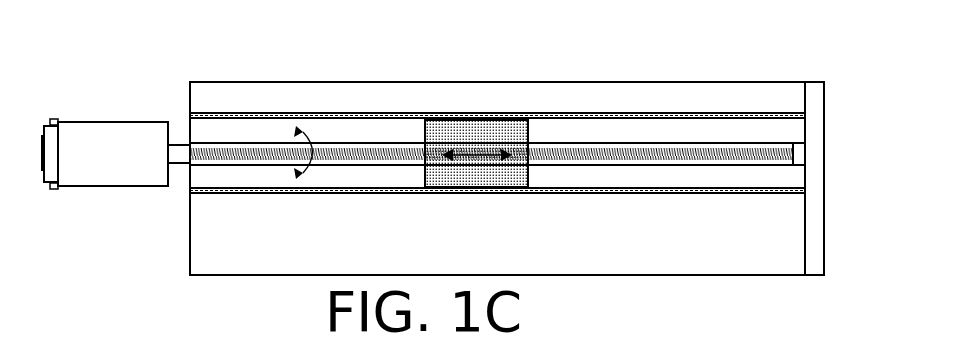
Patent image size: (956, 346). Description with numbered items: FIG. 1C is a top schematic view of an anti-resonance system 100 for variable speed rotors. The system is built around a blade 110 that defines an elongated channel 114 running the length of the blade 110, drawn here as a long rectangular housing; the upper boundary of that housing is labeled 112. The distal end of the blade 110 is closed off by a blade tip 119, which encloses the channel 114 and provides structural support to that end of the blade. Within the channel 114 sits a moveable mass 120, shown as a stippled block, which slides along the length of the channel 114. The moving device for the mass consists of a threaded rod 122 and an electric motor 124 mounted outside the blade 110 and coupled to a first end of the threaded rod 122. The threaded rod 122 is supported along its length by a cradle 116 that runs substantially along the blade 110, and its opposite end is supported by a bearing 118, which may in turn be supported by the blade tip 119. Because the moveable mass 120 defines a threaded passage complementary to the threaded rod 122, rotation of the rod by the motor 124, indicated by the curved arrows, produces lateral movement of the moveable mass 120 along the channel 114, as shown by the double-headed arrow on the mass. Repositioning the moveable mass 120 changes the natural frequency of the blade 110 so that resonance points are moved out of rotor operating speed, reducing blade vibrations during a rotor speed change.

The anti-resonance system 100 is at (91, 86).
The blade 110 is at (641, 82).
The housing top wall 112 is at (580, 81).
The elongated channel 114 is at (639, 186).
The cradle 116 is at (212, 142).
The bearing 118 is at (803, 155).
The blade tip 119 is at (813, 210).
The moveable mass 120 is at (475, 122).
The threaded rod 122 is at (394, 143).
The electric motor 124 is at (132, 165).